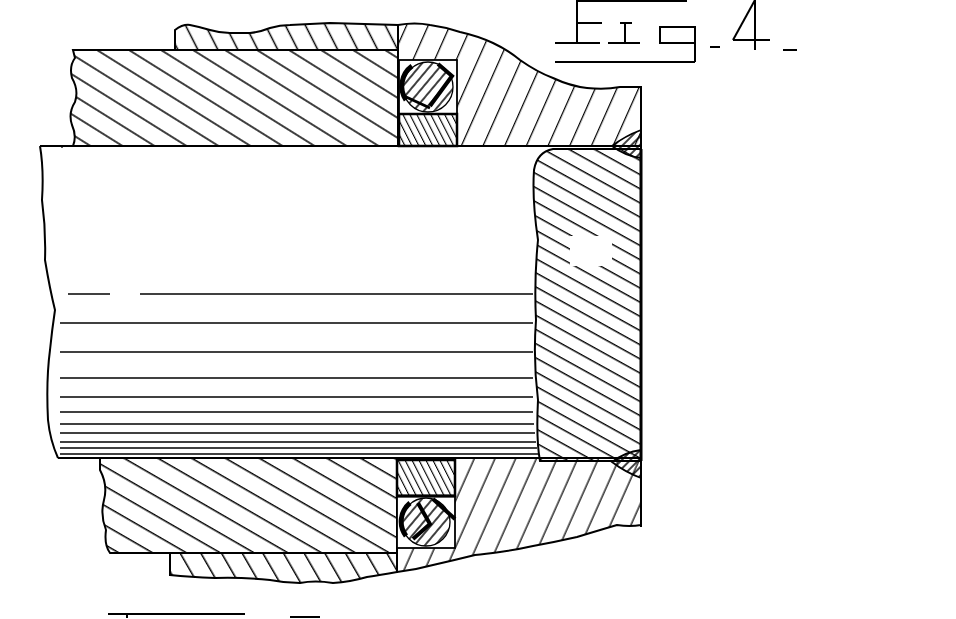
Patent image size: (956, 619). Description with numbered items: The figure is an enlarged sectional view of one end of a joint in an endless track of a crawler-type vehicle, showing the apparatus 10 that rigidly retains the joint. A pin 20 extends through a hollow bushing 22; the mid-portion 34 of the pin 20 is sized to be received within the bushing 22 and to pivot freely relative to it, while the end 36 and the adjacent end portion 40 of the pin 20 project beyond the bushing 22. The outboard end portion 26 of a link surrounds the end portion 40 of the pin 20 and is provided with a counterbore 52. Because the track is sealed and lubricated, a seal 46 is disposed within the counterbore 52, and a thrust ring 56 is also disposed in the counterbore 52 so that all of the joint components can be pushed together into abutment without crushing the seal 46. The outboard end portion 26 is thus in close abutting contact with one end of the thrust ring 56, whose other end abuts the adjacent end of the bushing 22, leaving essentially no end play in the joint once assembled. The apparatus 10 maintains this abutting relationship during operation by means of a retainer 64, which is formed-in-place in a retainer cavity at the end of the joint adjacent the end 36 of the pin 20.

The apparatus 10 is at (662, 452).
The pin 20 is at (78, 461).
The hollow bushing 22 is at (150, 65).
The outboard end portion 26 is at (607, 512).
The mid-portion 34 is at (63, 173).
The end 36 is at (640, 304).
The end portion 40 is at (610, 264).
The seal 46 is at (430, 550).
The counterbore 52 is at (457, 528).
The thrust ring 56 is at (421, 138).
The retainer 64 is at (654, 147).